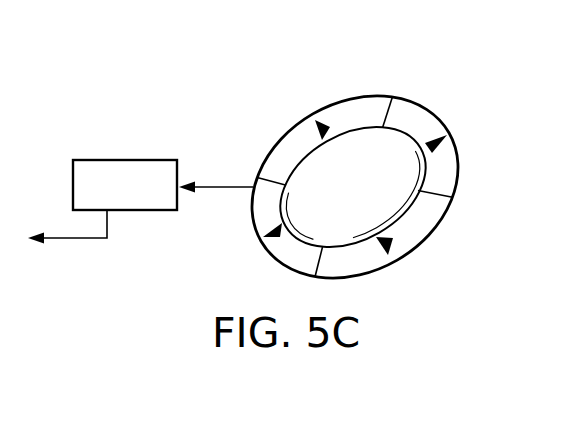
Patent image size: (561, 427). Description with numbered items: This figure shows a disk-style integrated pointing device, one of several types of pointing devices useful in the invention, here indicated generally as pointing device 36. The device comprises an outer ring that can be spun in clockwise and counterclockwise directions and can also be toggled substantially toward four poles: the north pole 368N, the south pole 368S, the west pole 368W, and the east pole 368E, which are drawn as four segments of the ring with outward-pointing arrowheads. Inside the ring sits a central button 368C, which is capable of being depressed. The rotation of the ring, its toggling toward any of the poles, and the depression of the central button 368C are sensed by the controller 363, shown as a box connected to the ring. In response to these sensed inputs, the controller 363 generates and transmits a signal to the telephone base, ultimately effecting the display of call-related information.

The directional indicator display 36 is at (434, 82).
The controller 363 is at (117, 160).
The west pole 368W is at (332, 113).
The north pole 368N is at (450, 144).
The south pole 368S is at (282, 253).
The east pole 368E is at (413, 233).
The central button 368C is at (380, 194).